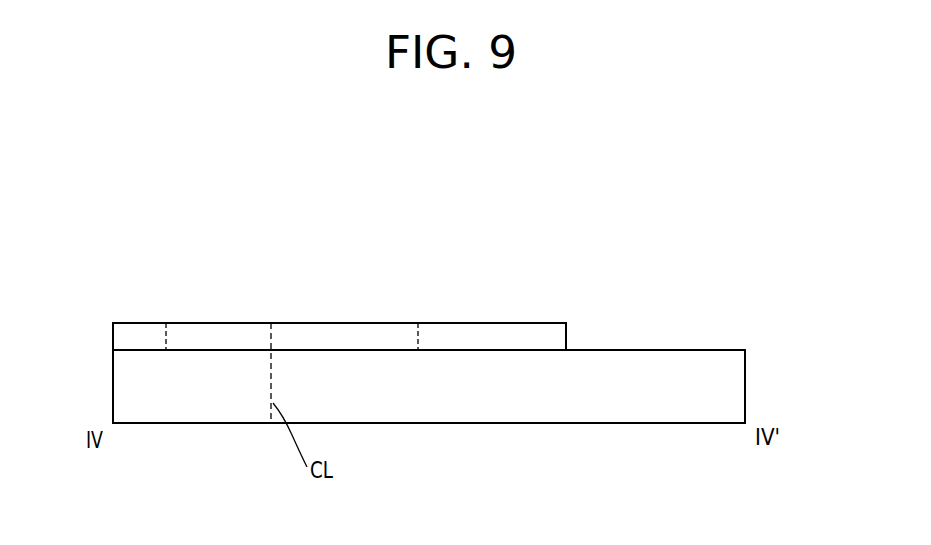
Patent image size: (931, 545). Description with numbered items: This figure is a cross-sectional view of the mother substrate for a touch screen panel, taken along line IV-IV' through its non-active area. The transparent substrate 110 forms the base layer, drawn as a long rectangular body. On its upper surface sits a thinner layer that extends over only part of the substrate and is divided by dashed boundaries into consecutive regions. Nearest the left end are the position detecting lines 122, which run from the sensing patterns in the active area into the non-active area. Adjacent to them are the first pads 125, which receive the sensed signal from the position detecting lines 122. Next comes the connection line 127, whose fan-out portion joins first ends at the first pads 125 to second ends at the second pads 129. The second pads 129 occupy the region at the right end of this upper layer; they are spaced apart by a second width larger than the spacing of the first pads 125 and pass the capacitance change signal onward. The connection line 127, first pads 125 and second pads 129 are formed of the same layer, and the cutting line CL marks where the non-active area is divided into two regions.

The transparent substrate 110 is at (738, 383).
The position detecting lines 122 is at (140, 332).
The first pads 125 is at (217, 332).
The connection line 127 is at (339, 332).
The second pads 129 is at (494, 332).